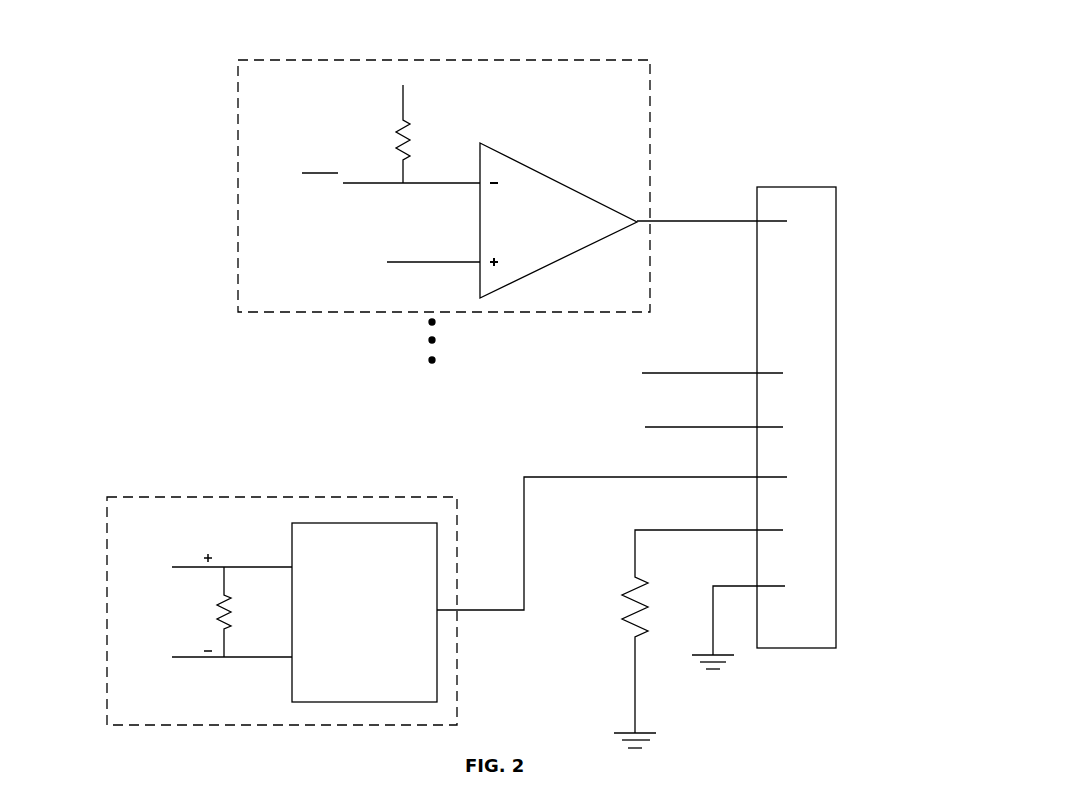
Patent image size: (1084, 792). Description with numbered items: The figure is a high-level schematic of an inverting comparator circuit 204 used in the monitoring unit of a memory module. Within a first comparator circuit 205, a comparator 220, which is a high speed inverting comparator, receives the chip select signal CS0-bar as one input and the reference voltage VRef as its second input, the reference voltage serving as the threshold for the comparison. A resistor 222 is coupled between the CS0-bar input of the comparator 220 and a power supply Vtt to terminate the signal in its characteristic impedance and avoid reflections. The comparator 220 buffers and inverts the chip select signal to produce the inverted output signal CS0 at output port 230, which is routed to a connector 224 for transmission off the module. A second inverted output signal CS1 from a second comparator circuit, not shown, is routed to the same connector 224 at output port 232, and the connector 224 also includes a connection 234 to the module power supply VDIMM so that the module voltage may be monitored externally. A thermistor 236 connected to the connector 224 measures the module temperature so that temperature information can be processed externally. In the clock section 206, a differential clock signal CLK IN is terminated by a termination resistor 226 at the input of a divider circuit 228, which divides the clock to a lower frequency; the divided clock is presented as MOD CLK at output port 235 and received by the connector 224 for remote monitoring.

The inverting comparator circuit 204 is at (188, 55).
The first comparator circuit 205 is at (651, 97).
The clock divider circuit block 206 is at (218, 497).
The comparator 220 is at (547, 177).
The resistor 222 is at (403, 133).
The connector 224 is at (830, 187).
The termination resistor 226 is at (218, 613).
The divider circuit 228 is at (350, 633).
The output port 230 is at (700, 213).
The output port 232 is at (667, 372).
The connection 234 is at (645, 423).
The output port 235 is at (524, 490).
The thermistor 236 is at (627, 580).